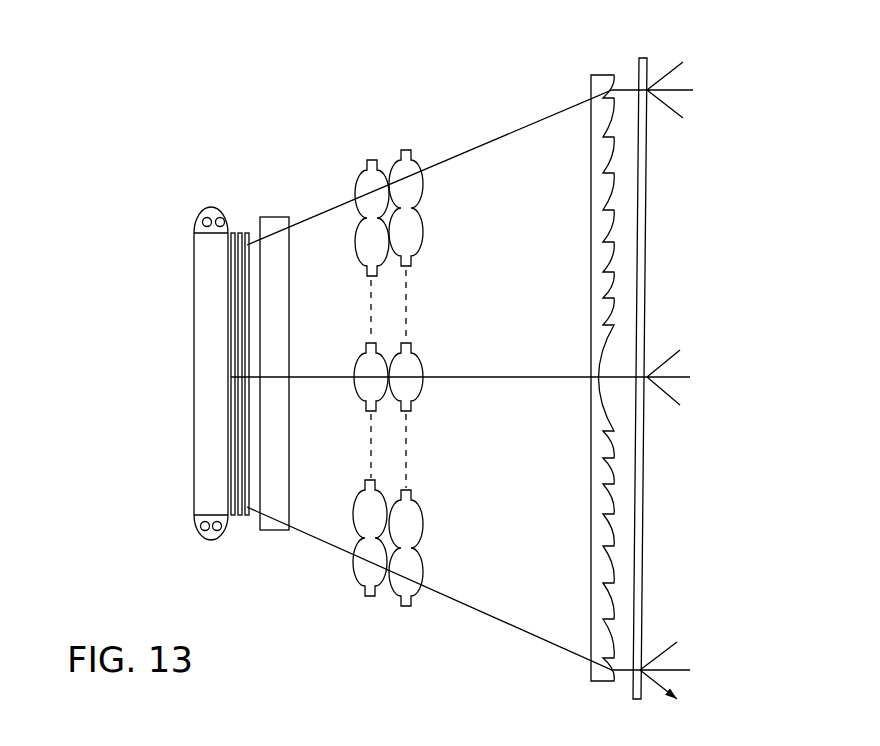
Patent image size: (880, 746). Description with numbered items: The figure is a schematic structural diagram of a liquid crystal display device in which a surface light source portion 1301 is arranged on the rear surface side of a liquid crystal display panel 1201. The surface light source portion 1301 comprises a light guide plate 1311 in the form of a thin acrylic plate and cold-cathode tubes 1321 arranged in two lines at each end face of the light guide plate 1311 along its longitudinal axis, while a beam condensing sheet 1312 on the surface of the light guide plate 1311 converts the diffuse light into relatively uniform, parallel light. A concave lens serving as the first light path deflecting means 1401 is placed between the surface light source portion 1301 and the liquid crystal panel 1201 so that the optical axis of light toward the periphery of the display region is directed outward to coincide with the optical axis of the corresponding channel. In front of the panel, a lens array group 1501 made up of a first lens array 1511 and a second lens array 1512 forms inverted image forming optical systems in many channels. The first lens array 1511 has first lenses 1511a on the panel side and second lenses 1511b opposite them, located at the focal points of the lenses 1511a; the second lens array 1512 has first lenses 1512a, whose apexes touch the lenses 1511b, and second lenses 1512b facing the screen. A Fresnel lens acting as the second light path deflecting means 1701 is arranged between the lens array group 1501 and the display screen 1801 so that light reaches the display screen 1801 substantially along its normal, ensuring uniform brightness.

The surface light source portion 1301 is at (178, 364).
The light guide plate 1311 is at (212, 382).
The cold-cathode tubes 1321 is at (224, 215).
The beam condensing sheet 1312 is at (234, 233).
The first light path deflecting means 1401 is at (248, 245).
The liquid crystal display panel 1201 is at (275, 531).
The lens array group 1501 is at (410, 406).
The first lens array 1511 is at (405, 391).
The second lens array 1512 is at (450, 385).
The first lenses of the first lens array 1511a is at (368, 166).
The second lenses of the first lens array 1511b is at (447, 131).
The first lenses of the second lens array 1512a is at (386, 490).
The second lenses of the second lens array 1512b is at (413, 506).
The second light path deflecting means 1701 is at (612, 76).
The display screen 1801 is at (643, 196).